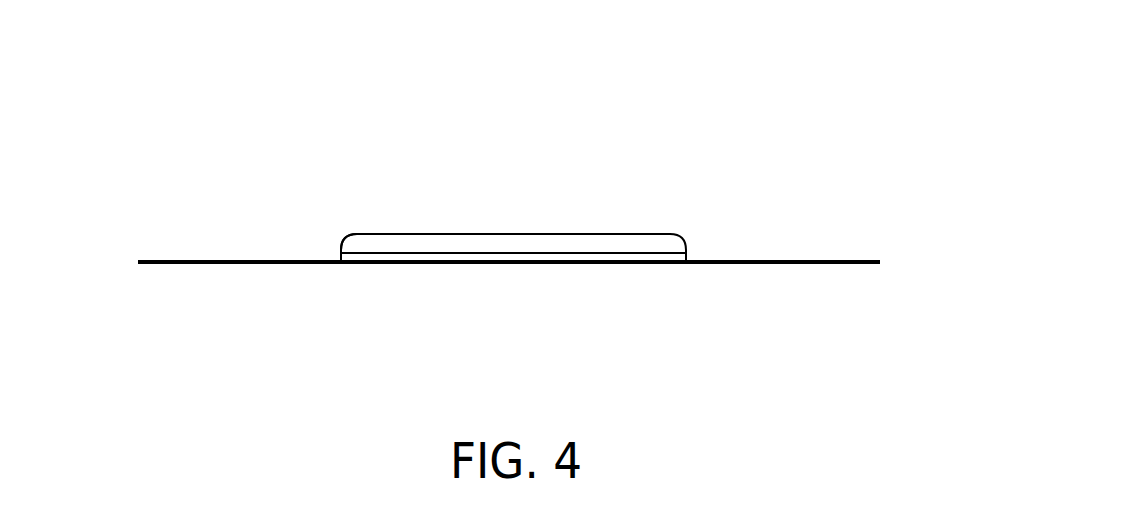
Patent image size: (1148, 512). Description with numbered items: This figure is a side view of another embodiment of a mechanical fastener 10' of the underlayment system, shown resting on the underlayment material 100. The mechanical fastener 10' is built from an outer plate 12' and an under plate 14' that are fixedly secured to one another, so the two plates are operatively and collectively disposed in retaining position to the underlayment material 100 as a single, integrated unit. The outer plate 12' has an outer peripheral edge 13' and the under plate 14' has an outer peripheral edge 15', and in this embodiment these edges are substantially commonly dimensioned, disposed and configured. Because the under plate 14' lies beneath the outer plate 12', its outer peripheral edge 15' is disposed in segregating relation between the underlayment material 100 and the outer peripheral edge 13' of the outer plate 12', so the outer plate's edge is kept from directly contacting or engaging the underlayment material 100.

The underlayment material 100 is at (840, 258).
The mechanical fastener 10' is at (564, 163).
The outer plate 12' is at (513, 156).
The outer peripheral edge 13' is at (314, 169).
The under plate 14' is at (513, 339).
The outer peripheral edge 15' is at (314, 339).